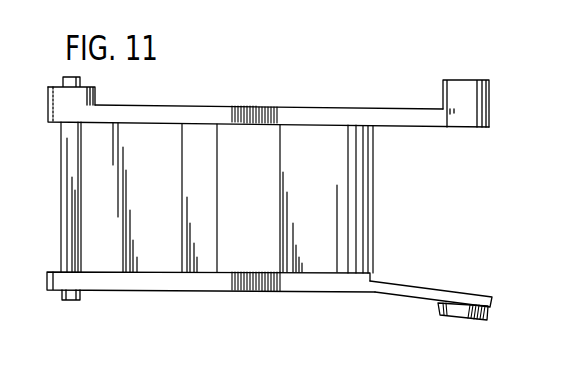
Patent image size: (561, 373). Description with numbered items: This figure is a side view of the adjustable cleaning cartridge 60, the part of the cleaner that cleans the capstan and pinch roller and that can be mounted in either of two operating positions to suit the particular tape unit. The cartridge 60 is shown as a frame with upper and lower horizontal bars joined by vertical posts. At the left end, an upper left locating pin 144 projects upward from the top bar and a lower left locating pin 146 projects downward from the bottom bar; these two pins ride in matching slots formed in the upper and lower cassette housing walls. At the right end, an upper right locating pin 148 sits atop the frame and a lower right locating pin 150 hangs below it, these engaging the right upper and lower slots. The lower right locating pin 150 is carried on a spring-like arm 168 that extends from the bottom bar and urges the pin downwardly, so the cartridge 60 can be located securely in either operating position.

The adjustable cleaning cartridge 60 is at (314, 102).
The upper left locating pin 144 is at (80, 76).
The lower left locating pin 146 is at (68, 300).
The upper right locating pin 148 is at (474, 88).
The lower right locating pin 150 is at (463, 319).
The spring-like arm 168 is at (402, 288).